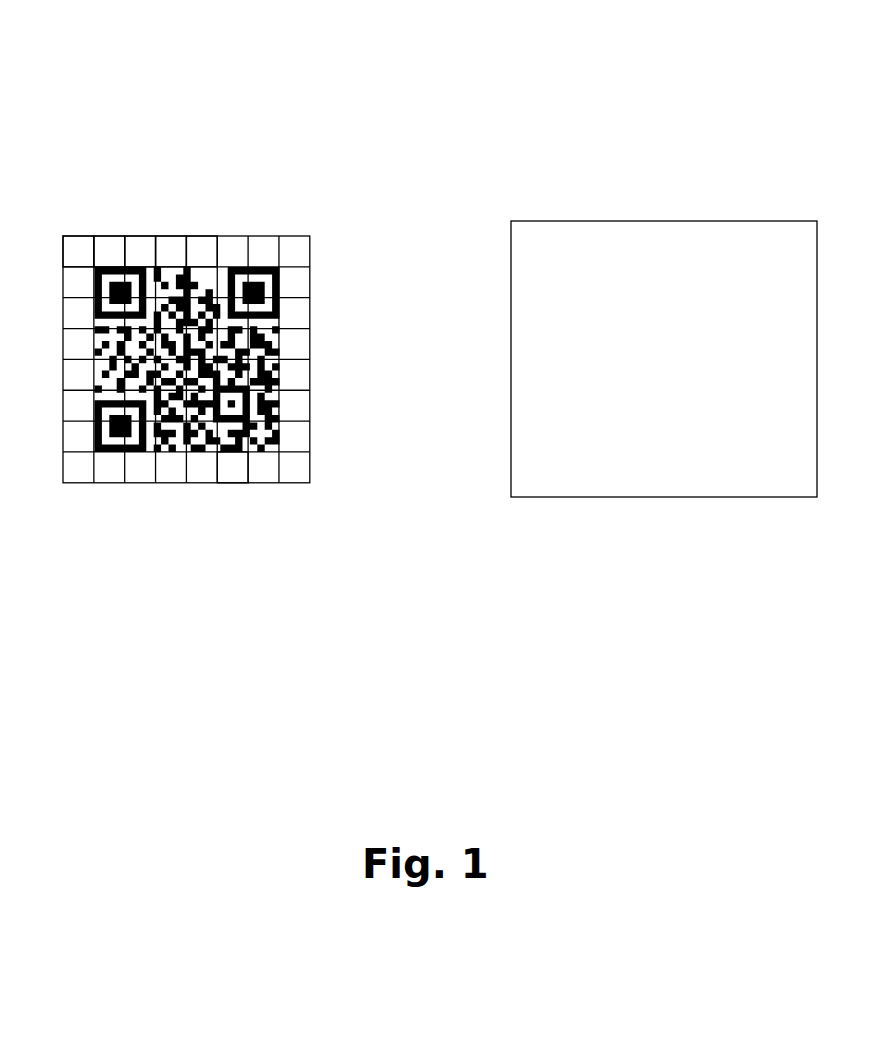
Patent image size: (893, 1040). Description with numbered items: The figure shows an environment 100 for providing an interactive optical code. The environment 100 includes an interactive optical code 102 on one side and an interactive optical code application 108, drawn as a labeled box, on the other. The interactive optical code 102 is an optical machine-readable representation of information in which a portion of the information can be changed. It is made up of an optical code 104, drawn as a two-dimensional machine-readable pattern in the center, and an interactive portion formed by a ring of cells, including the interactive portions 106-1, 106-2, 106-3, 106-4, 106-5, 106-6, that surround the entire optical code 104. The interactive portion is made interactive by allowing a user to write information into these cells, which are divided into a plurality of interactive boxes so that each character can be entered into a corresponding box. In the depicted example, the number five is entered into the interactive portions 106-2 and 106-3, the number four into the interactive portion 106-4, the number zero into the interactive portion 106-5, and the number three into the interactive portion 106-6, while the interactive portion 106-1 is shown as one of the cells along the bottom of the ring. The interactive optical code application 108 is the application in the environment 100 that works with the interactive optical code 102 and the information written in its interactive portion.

The environment 100 is at (388, 99).
The interactive optical code 102 is at (172, 592).
The optical code 104 is at (110, 452).
The interactive portion 106-1 is at (233, 483).
The interactive portion 106-2 is at (80, 237).
The interactive portion 106-3 is at (110, 237).
The interactive portion 106-4 is at (141, 237).
The interactive portion 106-5 is at (172, 237).
The interactive portion 106-6 is at (203, 237).
The interactive optical code application 108 is at (602, 221).